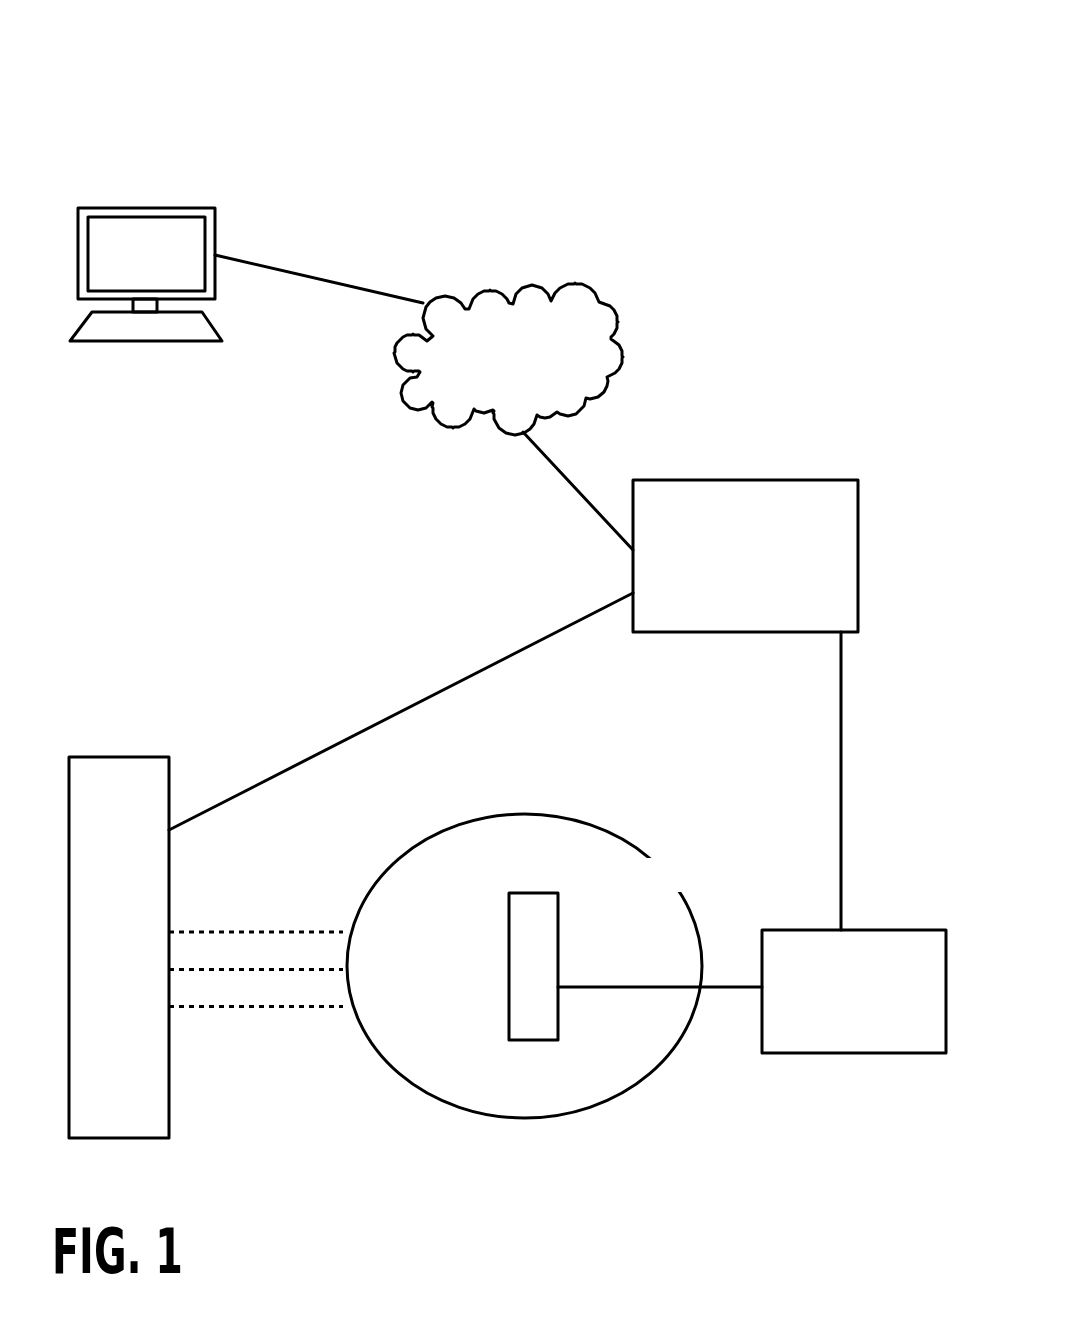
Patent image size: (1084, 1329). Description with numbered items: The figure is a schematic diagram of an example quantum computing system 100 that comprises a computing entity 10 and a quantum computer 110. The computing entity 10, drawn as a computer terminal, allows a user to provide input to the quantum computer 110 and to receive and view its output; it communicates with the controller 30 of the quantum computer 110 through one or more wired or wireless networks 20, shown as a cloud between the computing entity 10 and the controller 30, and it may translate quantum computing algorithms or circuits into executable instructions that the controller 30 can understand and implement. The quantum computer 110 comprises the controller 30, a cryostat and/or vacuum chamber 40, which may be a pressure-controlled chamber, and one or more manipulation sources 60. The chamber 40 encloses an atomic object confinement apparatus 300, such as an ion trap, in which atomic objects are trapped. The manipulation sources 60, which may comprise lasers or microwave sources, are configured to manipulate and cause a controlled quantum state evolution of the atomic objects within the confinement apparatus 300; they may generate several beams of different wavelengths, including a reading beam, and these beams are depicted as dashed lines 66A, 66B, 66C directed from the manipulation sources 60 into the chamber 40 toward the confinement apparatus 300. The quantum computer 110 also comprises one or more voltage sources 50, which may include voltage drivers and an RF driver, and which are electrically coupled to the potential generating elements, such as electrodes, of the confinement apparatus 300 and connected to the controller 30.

The quantum computing system 100 is at (746, 88).
The quantum computer 110 is at (751, 393).
The computing entity 10 is at (145, 218).
The wired or wireless networks 20 is at (578, 283).
The controller 30 is at (745, 556).
The cryostat and/or vacuum chamber 40 is at (688, 912).
The voltage sources 50 is at (854, 991).
The manipulation sources 60 is at (126, 757).
The ion beam 66A is at (337, 932).
The ion beam 66B is at (315, 969).
The ion beam 66C is at (337, 1006).
The atomic object confinement apparatus 300 is at (560, 962).